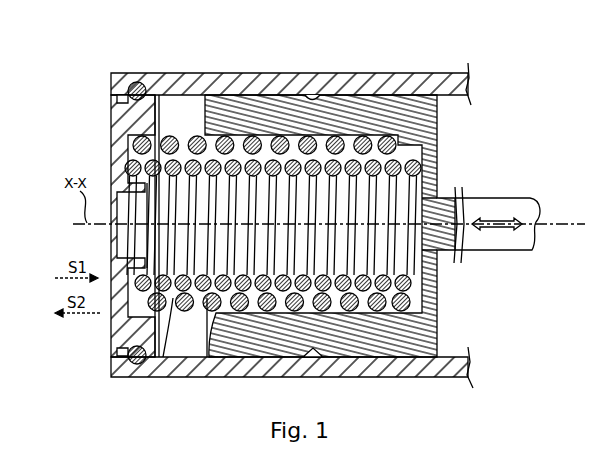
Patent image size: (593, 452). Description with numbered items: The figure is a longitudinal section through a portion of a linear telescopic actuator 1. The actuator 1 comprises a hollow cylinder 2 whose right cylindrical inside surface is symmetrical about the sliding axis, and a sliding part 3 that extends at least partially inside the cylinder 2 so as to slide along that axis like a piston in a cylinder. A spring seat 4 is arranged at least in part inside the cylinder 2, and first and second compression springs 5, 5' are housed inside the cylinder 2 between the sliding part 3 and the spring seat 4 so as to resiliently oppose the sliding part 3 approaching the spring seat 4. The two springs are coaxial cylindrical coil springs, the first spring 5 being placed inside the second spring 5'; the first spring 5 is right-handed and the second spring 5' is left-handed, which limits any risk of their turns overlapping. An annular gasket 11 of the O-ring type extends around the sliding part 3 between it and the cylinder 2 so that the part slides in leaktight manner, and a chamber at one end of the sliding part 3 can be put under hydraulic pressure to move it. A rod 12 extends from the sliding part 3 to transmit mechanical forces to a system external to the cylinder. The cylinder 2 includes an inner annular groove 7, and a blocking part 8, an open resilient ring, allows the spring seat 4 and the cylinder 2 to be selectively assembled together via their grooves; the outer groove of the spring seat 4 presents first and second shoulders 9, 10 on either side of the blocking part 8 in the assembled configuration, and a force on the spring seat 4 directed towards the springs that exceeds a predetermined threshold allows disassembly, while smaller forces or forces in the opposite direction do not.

The actuator 1 is at (75, 64).
The hollow cylinder 2 is at (318, 78).
The sliding part 3 is at (436, 318).
The spring seat 4 is at (112, 143).
The first compression spring 5 is at (179, 355).
The second compression spring 5' is at (225, 355).
The inner annular groove 7 is at (143, 88).
The blocking part 8 is at (133, 83).
The first shoulder 9 is at (112, 351).
The second shoulder 10 is at (158, 359).
The annular gasket 11 is at (309, 97).
The rod 12 is at (507, 197).